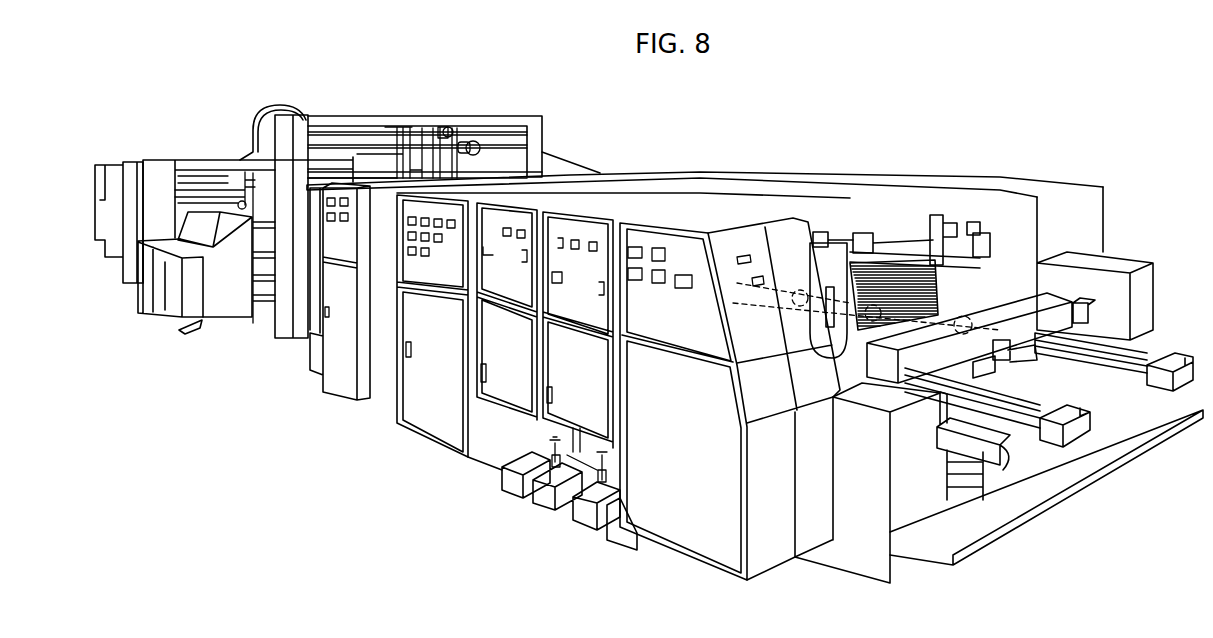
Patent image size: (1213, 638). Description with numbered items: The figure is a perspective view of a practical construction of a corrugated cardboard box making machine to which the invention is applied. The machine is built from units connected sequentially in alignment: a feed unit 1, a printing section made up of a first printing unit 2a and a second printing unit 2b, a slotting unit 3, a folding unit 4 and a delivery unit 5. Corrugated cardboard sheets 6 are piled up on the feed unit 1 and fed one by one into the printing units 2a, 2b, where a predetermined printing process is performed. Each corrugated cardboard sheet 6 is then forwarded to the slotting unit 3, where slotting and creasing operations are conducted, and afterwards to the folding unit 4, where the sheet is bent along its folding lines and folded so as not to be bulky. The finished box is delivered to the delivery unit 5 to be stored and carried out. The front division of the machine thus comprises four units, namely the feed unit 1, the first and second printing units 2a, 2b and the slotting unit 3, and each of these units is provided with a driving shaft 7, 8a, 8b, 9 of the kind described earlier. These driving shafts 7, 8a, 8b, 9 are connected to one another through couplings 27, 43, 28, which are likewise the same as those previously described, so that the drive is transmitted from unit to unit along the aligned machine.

The feed unit 1 is at (688, 525).
The first printing unit 2a is at (592, 232).
The second printing unit 2b is at (520, 224).
The slotting unit 3 is at (443, 412).
The folding unit 4 is at (244, 300).
The delivery unit 5 is at (104, 258).
The corrugated cardboard sheet 6 is at (927, 270).
The driving shaft 7 is at (1015, 235).
The driving shaft 8a is at (955, 310).
The driving shaft 8b is at (873, 290).
The driving shaft 9 is at (733, 302).
The coupling 27 is at (1005, 340).
The coupling 28 is at (760, 285).
The coupling 43 is at (890, 305).